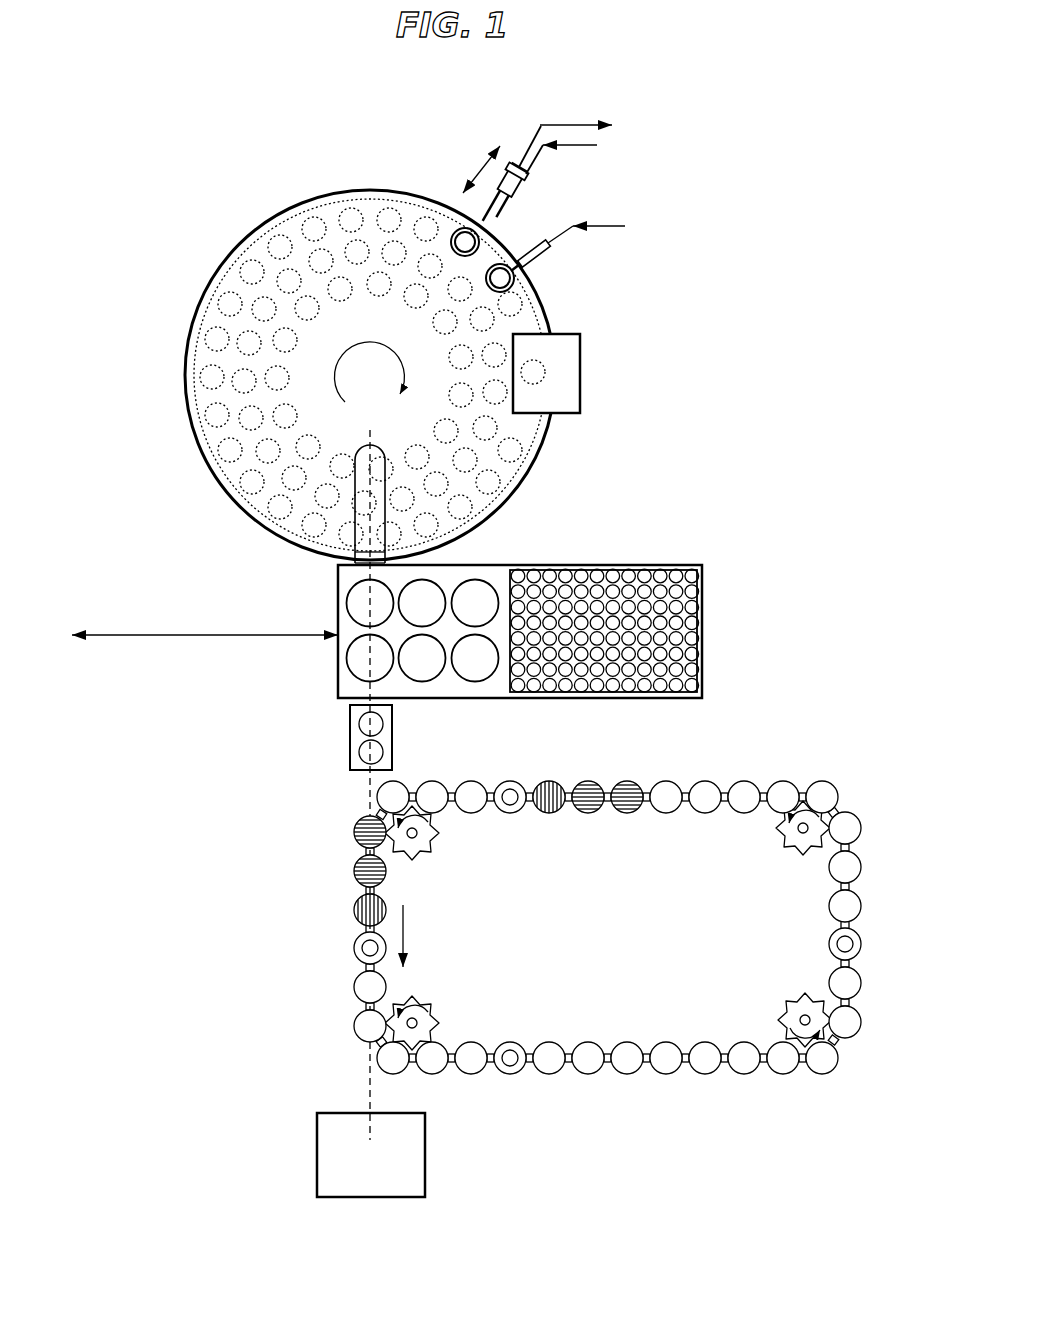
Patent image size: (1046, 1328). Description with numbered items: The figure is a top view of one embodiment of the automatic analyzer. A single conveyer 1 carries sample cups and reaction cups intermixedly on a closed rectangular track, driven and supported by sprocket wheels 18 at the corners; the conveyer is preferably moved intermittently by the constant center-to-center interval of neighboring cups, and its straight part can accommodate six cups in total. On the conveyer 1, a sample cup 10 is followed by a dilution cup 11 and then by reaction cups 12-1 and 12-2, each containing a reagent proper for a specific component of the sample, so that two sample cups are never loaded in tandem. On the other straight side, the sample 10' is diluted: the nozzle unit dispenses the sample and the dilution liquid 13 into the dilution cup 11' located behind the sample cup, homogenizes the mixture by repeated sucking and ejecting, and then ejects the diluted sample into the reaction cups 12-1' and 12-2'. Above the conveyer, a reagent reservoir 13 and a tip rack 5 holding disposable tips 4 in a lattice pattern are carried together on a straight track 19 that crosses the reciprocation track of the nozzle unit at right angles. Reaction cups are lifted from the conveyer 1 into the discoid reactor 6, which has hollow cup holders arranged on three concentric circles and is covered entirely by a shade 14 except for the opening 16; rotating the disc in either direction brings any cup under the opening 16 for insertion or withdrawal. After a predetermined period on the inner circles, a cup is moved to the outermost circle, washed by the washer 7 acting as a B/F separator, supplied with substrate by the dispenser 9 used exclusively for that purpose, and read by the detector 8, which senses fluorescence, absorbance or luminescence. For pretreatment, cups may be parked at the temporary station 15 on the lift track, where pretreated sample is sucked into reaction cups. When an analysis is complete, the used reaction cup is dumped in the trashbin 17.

The conveyer 1 is at (594, 781).
The tips 4 is at (658, 568).
The tip rack 5 is at (703, 620).
The reactor 6 is at (512, 445).
The washer 7 is at (522, 188).
The detector 8 is at (568, 372).
The dispenser 9 is at (533, 252).
The sample cup 10 is at (510, 835).
The dilution cup 11 is at (553, 829).
The reaction cup 12-1 is at (602, 829).
The reaction cup 12-2 is at (654, 829).
The sample 10' is at (337, 946).
The dilution cup 11' is at (337, 908).
The reaction cup 12-1' is at (322, 870).
The reaction cup 12-2' is at (322, 830).
The reagent reservoir 13 is at (475, 657).
The shade 14 is at (512, 499).
The temporary station 15 is at (358, 724).
The opening 16 is at (353, 530).
The trashbin 17 is at (425, 1155).
The sprocket wheel 18 is at (440, 1010).
The straight track 19 is at (206, 633).